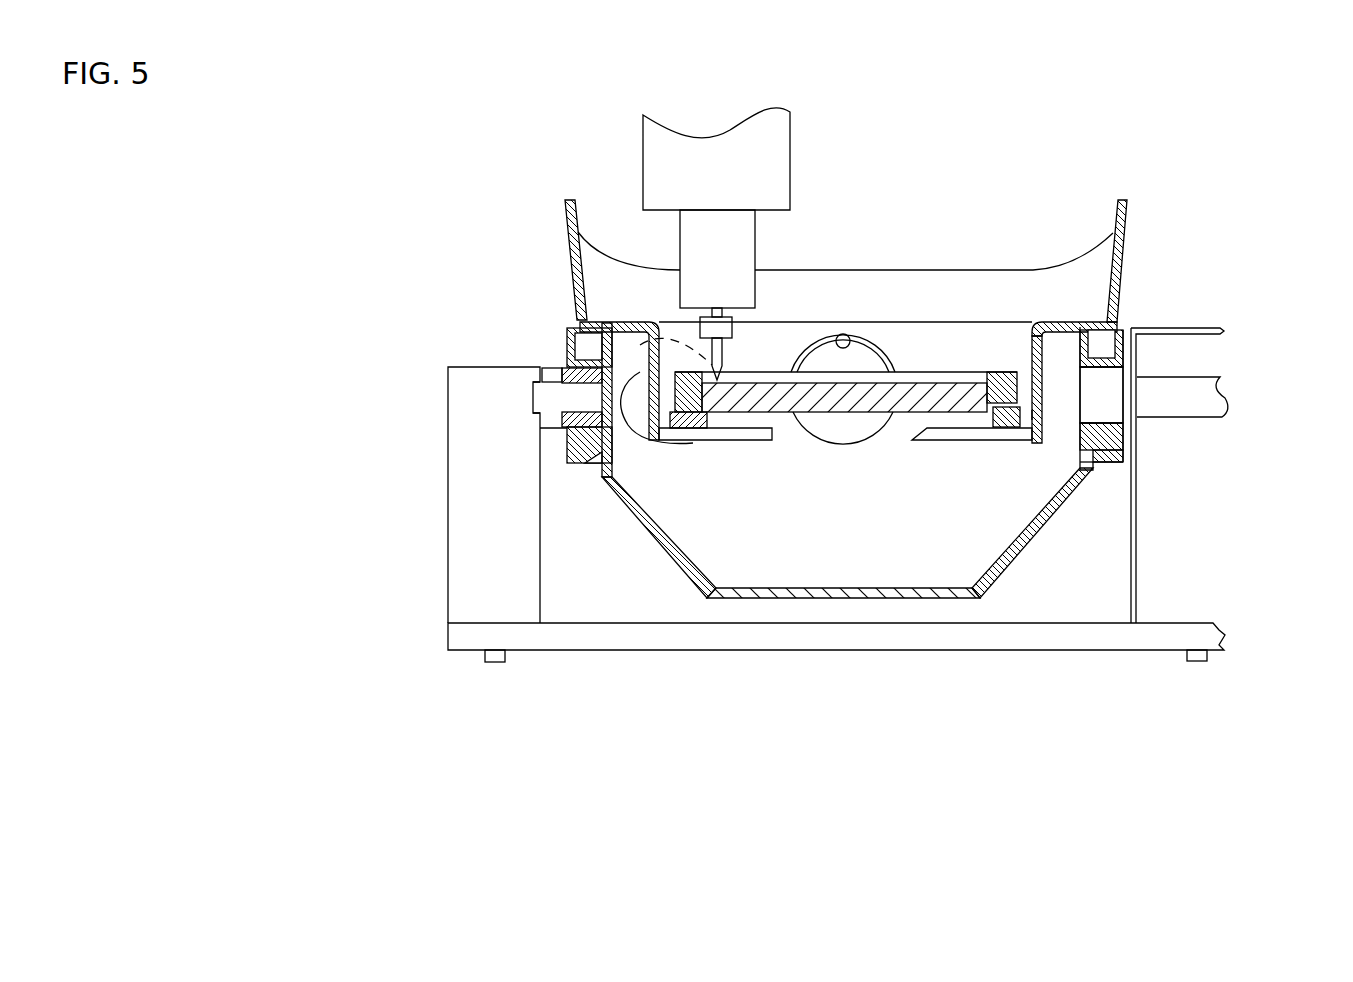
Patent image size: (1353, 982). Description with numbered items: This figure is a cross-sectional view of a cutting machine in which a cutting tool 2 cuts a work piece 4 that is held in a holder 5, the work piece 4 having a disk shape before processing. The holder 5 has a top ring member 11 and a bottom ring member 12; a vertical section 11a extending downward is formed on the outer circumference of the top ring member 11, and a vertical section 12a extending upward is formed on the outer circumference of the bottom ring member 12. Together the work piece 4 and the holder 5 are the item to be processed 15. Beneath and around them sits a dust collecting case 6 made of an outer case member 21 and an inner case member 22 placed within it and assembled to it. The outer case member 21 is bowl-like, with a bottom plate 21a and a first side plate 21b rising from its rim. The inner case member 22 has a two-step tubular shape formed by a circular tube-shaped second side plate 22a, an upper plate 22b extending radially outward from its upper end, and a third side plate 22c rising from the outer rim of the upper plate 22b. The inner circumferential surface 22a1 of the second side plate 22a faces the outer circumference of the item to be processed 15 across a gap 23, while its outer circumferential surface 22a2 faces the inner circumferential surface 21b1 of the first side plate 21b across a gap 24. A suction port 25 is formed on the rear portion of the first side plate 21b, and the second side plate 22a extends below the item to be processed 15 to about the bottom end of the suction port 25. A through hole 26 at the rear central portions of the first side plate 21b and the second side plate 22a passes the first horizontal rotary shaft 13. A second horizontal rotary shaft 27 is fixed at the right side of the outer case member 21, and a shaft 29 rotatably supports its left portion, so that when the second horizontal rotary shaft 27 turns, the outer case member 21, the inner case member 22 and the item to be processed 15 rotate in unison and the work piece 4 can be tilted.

The cutting tool 2 is at (725, 357).
The work piece 4 is at (900, 412).
The holder 5 is at (985, 528).
The dust collecting case 6 is at (960, 252).
The top ring member 11 is at (993, 372).
The vertical section 11a is at (690, 395).
The bottom ring member 12 is at (1005, 427).
The vertical section 12a is at (685, 410).
The first horizontal rotary shaft 13 is at (882, 350).
The item to be processed 15 is at (795, 452).
The outer case member 21 is at (650, 547).
The bottom plate 21a is at (817, 598).
The first side plate 21b is at (1112, 452).
The inner circumferential surface 21b1 is at (1080, 350).
The inner case member 22 is at (565, 243).
The second side plate 22a is at (1022, 445).
The inner circumferential surface 22a1 is at (1052, 415).
The outer circumferential surface 22a2 is at (1078, 462).
The upper plate 22b is at (1077, 322).
The third side plate 22c is at (1122, 245).
The gap 23 is at (1023, 392).
The gap 24 is at (1075, 398).
The suction port 25 is at (640, 372).
The through hole 26 is at (838, 340).
The second horizontal rotary shaft 27 is at (1197, 418).
The shaft 29 is at (550, 390).